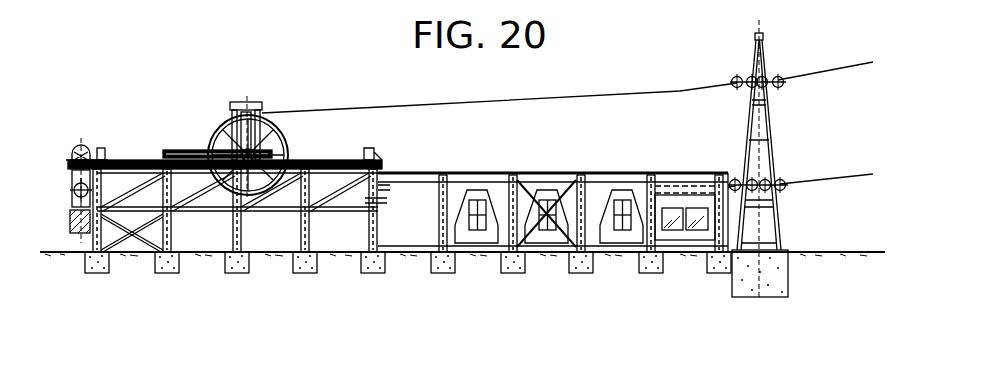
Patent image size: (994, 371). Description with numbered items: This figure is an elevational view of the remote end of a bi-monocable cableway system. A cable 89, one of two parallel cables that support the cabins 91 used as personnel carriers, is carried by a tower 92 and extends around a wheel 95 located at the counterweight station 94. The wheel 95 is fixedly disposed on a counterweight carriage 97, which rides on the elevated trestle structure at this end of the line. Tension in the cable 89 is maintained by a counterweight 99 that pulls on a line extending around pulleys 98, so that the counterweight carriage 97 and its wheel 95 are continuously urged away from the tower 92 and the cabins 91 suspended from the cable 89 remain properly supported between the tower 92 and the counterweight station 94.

The cable 89 is at (830, 72).
The cabins 91 is at (541, 250).
The tower 92 is at (766, 58).
The counterweight station 94 is at (237, 133).
The wheel 95 is at (287, 152).
The counterweight carriage 97 is at (183, 150).
The pulleys 98 is at (76, 155).
The counterweight 99 is at (70, 230).